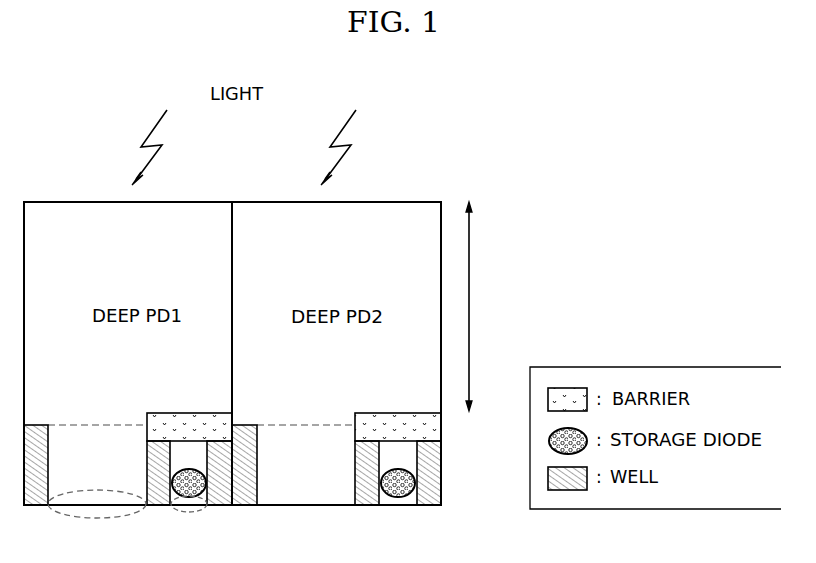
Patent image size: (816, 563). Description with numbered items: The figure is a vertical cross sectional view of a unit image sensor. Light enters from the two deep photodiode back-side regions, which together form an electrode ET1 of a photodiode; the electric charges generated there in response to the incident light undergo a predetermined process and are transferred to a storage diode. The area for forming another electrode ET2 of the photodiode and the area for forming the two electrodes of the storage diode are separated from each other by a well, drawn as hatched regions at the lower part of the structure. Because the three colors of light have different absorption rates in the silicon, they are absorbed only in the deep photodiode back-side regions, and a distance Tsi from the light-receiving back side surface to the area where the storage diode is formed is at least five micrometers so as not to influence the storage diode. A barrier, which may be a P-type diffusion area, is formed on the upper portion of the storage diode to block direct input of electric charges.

The electrode of photodiode ET1 is at (97, 518).
The another electrode of photodiode ET2 is at (189, 512).
The distance from back side surface to storage diode area Tsi is at (484, 306).